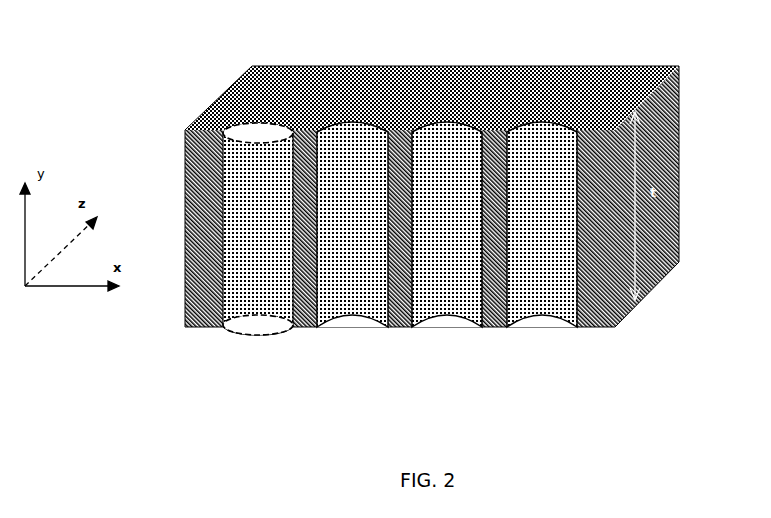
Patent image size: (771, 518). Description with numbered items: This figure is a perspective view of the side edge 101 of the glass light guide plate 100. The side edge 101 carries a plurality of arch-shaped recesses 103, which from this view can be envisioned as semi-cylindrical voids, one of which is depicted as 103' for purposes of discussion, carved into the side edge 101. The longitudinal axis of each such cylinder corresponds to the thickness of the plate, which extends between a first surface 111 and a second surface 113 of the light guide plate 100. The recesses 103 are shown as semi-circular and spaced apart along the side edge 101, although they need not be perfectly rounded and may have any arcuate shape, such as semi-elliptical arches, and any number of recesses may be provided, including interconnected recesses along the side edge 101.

The glass light guide plate 100 is at (452, 98).
The side edge 101 is at (218, 222).
The arch-shaped recesses 103 is at (447, 264).
The semi-cylindrical void 103' is at (258, 264).
The first surface 111 is at (657, 67).
The second surface 113 is at (625, 315).